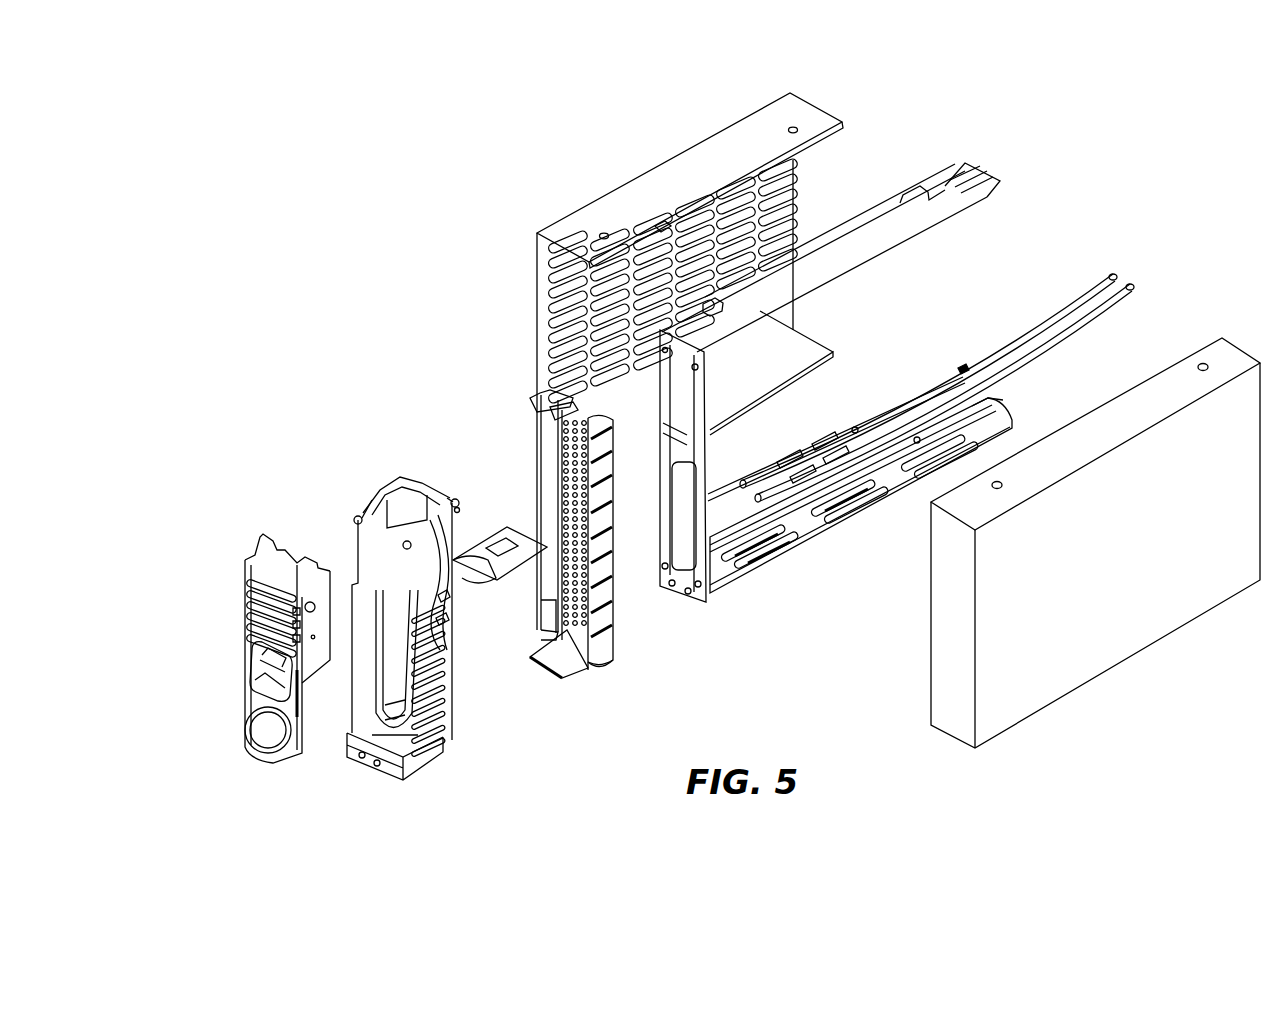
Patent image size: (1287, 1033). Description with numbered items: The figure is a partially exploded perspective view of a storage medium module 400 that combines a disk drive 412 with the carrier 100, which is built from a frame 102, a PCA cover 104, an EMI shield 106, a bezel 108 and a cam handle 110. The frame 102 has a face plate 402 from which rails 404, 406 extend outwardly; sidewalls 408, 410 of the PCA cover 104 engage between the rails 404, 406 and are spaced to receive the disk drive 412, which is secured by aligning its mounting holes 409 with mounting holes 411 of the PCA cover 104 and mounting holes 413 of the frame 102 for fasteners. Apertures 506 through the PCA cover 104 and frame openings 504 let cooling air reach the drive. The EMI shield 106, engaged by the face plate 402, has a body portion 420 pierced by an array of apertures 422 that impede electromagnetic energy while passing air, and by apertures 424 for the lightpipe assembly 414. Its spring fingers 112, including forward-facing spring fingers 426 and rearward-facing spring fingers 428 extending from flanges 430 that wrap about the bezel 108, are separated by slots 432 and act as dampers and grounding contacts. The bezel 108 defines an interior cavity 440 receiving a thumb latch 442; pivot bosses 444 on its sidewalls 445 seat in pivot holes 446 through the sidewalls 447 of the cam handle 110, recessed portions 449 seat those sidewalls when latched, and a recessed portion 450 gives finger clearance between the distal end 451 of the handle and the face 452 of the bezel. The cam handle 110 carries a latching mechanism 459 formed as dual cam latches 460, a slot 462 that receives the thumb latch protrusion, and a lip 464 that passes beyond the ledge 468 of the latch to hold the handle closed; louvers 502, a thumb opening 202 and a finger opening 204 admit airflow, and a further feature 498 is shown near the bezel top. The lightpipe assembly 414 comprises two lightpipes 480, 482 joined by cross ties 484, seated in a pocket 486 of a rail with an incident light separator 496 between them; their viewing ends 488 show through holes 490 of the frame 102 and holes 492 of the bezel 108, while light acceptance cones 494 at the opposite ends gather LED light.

The carrier 100 is at (309, 150).
The frame 102 is at (858, 232).
The PCA cover 104 is at (612, 193).
The EMI shield 106 is at (545, 437).
The bezel 108 is at (443, 597).
The cam handle 110 is at (262, 700).
The spring fingers 112 is at (590, 656).
The thumb opening 202 is at (245, 640).
The finger opening 204 is at (256, 746).
The carrier assembly 400 is at (300, 310).
The face plate 402 is at (565, 330).
The rail 404 is at (836, 272).
The rail 406 is at (832, 530).
The sidewall 408 is at (674, 172).
The mounting holes 409 is at (1205, 360).
The sidewall 410 is at (813, 353).
The mounting holes 411 is at (795, 125).
The disk drive 412 is at (941, 627).
The mounting holes 413 is at (660, 230).
The lightpipe assembly 414 is at (877, 417).
The body portion 420 is at (557, 457).
The apertures 422 is at (566, 512).
The apertures 424 is at (571, 662).
The forward-facing spring fingers 426 is at (543, 395).
The rearward-facing spring fingers 428 is at (640, 420).
The flanges 430 is at (543, 613).
The slots 432 is at (614, 560).
The interior cavity 440 is at (374, 696).
The thumb latch 442 is at (495, 530).
The pivot bosses 444 is at (455, 500).
The sidewalls 445 is at (448, 705).
The pivot holes 446 is at (315, 597).
The sidewalls 447 is at (326, 645).
The recessed portion 449 is at (440, 620).
The recessed portion 450 is at (445, 755).
The distal end 451 is at (266, 760).
The face 452 is at (398, 730).
The latching mechanism 459 is at (290, 485).
The cam latches 460 is at (300, 562).
The slot 462 is at (302, 712).
The lip 464 is at (248, 690).
The ledge 468 is at (476, 545).
The lightpipe 480 is at (1009, 331).
The lightpipe 482 is at (1037, 341).
The cross ties 484 is at (963, 369).
The pocket 486 is at (997, 401).
The viewing ends 488 is at (750, 473).
The holes 490 is at (672, 596).
The holes 492 is at (366, 758).
The light acceptance cones 494 is at (1130, 283).
The incident light separator 496 is at (848, 465).
The pins 498 is at (457, 506).
The louvers 502 is at (250, 603).
The frame openings 504 is at (672, 486).
The apertures 506 is at (700, 256).